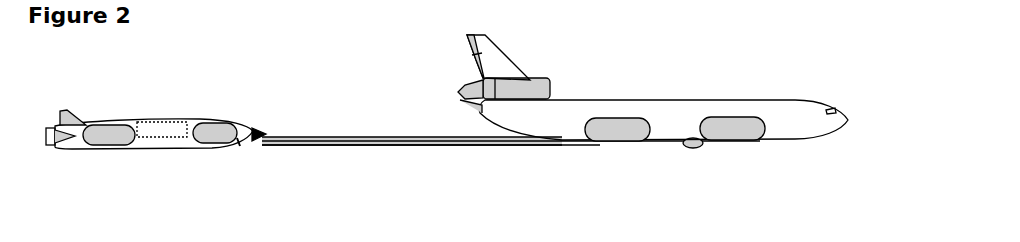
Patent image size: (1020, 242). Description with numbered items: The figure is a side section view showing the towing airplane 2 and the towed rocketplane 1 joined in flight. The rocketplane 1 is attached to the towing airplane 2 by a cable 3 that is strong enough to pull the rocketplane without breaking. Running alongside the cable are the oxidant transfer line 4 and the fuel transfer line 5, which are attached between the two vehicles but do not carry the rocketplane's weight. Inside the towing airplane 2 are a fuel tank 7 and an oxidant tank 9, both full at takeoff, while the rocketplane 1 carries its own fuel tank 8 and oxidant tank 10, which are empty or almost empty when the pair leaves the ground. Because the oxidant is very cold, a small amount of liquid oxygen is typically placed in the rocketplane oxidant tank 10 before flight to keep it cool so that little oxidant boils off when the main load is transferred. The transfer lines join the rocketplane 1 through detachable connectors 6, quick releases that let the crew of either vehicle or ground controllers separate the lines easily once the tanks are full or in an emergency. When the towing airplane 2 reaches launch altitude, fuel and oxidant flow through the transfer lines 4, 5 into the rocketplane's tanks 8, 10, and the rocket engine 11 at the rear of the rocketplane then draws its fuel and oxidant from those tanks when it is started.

The rocketplane 1 is at (215, 120).
The towing airplane 2 is at (684, 104).
The cable 3 is at (372, 138).
The oxidant transfer line 4 is at (470, 144).
The fuel transfer line 5 is at (426, 137).
The detachable connectors 6 is at (237, 141).
The fuel tank 7 is at (733, 142).
The fuel tank 8 is at (208, 118).
The oxidant tank 9 is at (617, 142).
The oxidant tank 10 is at (110, 124).
The rocket engine 11 is at (58, 142).